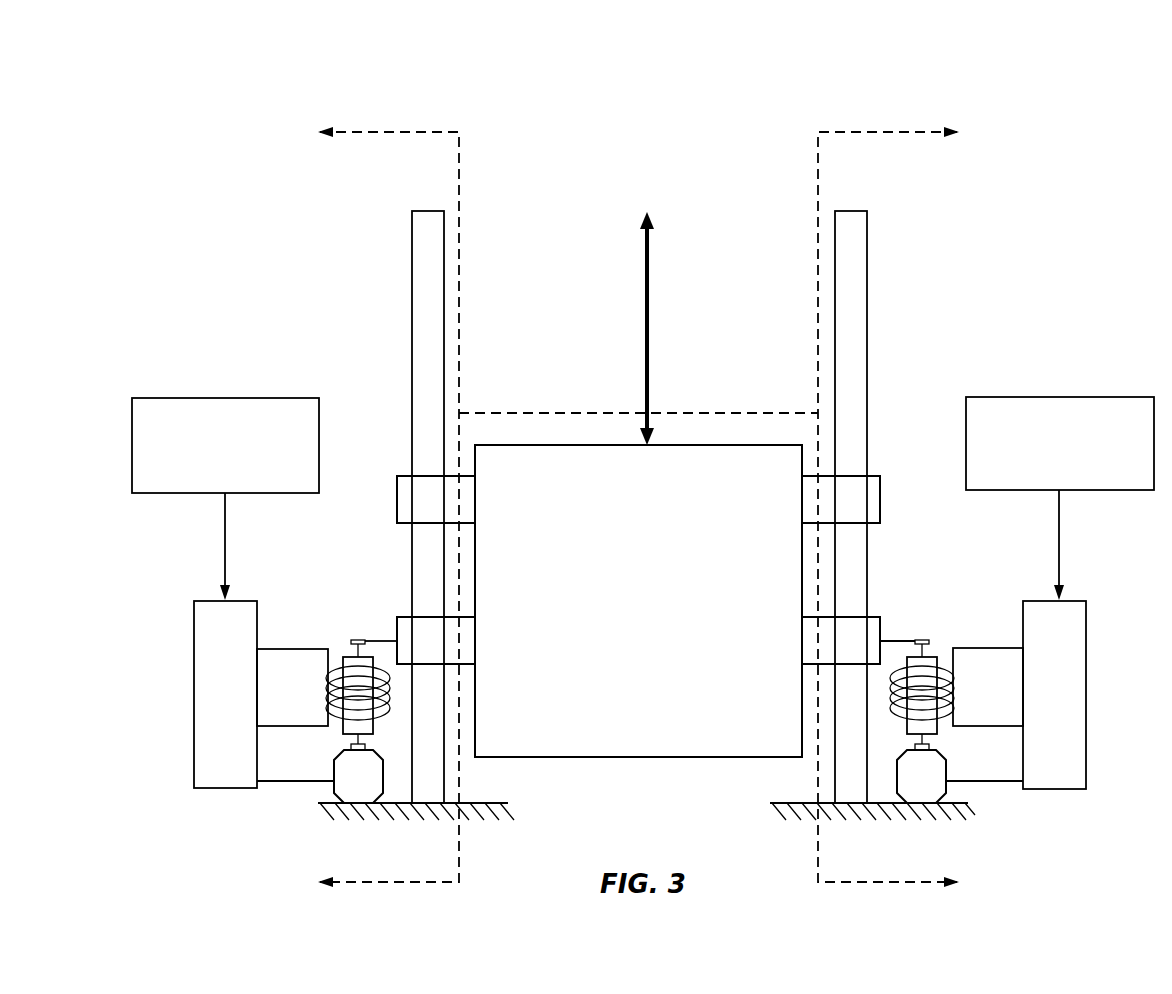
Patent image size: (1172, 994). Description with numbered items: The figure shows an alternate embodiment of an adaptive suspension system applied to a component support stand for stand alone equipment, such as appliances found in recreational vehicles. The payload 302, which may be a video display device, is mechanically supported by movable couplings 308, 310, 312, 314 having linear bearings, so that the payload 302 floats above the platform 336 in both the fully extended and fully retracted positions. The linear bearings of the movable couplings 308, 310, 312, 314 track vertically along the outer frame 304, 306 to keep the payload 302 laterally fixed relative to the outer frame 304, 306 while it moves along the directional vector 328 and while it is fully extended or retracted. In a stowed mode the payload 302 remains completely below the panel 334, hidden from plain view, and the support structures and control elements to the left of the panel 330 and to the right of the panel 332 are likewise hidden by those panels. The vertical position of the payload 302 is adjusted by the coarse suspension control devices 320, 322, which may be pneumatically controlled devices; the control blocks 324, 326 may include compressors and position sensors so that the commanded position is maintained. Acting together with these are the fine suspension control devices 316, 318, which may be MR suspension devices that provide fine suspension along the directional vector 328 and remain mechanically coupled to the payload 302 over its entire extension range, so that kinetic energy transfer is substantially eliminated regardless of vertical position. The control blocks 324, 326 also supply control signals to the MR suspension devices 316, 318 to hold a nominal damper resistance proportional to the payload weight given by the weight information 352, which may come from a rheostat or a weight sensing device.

The payload 302 is at (630, 757).
The outer frame 304 is at (428, 211).
The outer frame 306 is at (851, 211).
The movable coupling 308 is at (875, 476).
The movable coupling 310 is at (875, 617).
The movable coupling 312 is at (406, 476).
The movable coupling 314 is at (406, 617).
The fine suspension control device 316 is at (932, 655).
The fine suspension control device 318 is at (349, 655).
The coarse suspension control device 320 is at (940, 758).
The coarse suspension control device 322 is at (336, 758).
The control block 324 is at (1075, 601).
The control block 326 is at (210, 601).
The directional vector 328 is at (649, 305).
The panel 330 is at (460, 143).
The panel 332 is at (817, 146).
The panel 334 is at (480, 413).
The platform 336 is at (486, 803).
The weight information 352 is at (240, 398).